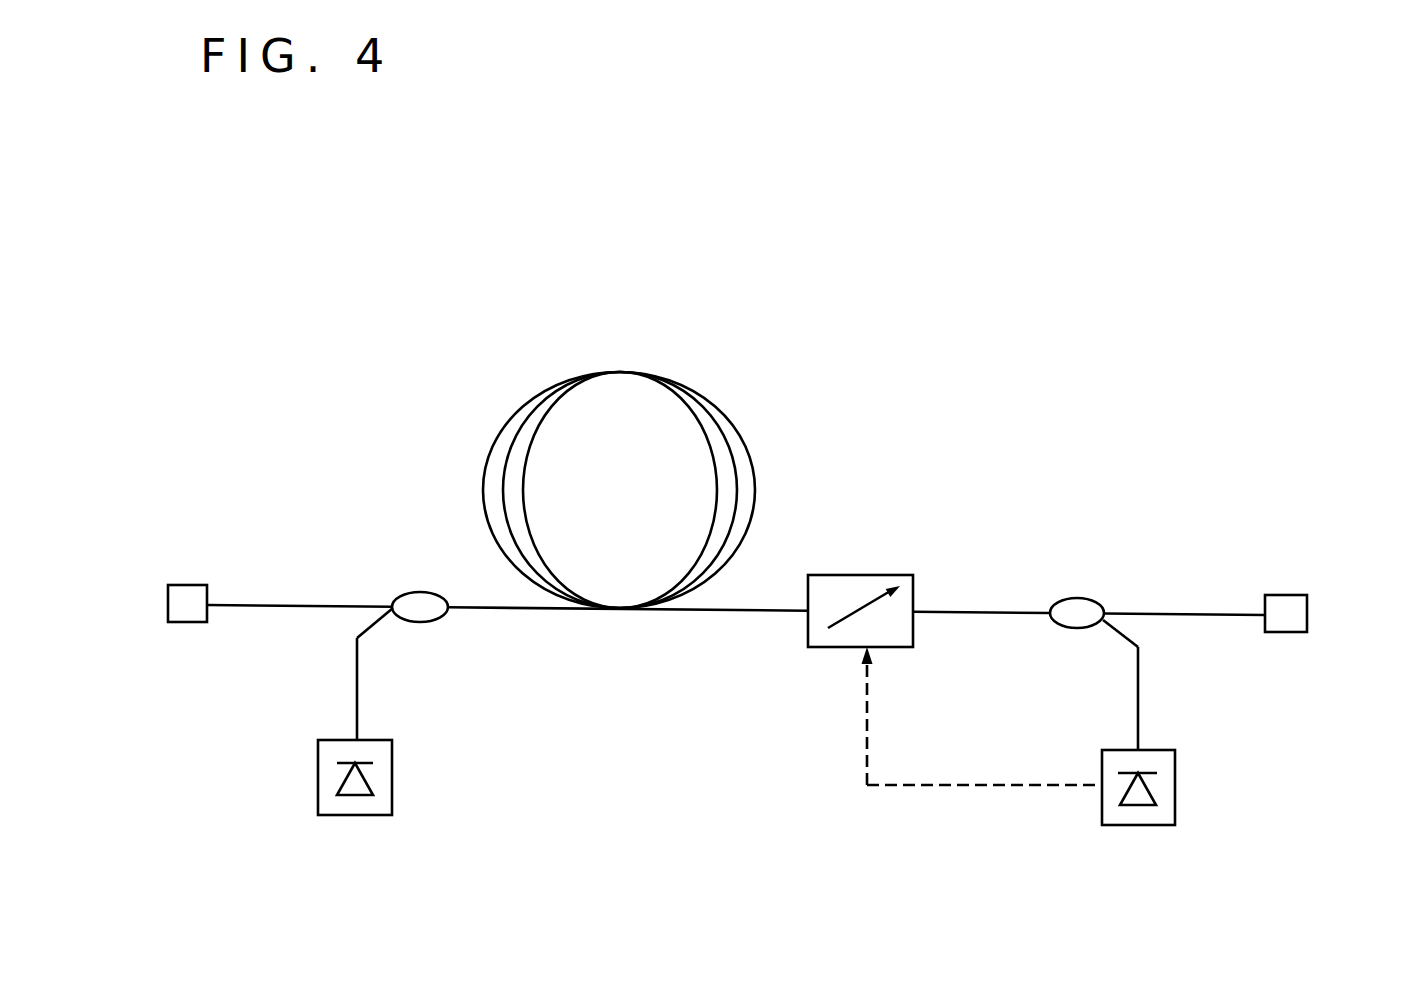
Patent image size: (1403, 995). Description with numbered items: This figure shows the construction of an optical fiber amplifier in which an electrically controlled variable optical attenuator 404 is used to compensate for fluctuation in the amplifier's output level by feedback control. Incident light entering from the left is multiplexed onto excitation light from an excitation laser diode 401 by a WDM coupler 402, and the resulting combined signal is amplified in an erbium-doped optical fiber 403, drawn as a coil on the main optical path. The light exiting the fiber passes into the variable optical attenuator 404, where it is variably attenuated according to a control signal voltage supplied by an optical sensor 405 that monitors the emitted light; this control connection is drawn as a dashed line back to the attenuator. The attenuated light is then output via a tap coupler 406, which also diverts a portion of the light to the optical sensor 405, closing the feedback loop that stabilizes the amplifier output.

The excitation laser diode 401 is at (362, 815).
The WDM coupler 402 is at (425, 622).
The erbium-doped optical fiber 403 is at (662, 335).
The variable optical attenuator 404 is at (862, 575).
The optical sensor 405 is at (1143, 825).
The tap coupler 406 is at (1080, 598).